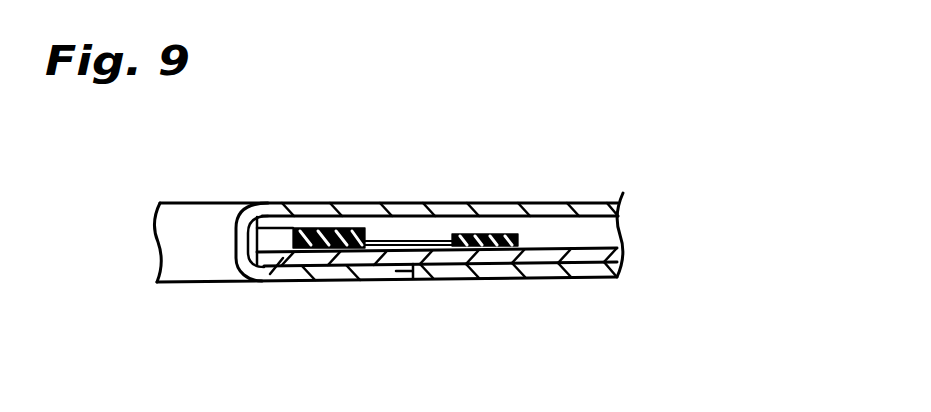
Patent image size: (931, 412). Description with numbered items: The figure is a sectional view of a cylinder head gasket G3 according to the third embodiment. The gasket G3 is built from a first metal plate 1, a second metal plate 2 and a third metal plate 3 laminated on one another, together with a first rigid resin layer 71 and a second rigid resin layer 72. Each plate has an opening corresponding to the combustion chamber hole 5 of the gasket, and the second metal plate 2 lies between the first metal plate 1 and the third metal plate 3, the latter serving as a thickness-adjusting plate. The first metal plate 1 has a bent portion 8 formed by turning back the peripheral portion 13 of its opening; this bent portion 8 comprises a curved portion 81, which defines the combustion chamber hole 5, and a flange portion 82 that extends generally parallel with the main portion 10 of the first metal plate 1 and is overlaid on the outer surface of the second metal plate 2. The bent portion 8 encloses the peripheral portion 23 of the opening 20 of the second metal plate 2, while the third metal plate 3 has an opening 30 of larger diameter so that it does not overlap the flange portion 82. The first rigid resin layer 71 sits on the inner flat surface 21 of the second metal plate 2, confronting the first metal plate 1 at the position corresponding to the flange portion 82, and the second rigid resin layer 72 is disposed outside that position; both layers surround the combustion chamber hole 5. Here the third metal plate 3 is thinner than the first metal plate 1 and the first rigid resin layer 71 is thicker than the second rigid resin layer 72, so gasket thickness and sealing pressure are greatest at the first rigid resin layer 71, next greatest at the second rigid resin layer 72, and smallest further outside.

The first metal plate 1 is at (586, 209).
The second metal plate 2 is at (618, 252).
The third metal plate 3 is at (553, 278).
The combustion chamber hole 5 is at (208, 212).
The bent portion 8 is at (302, 291).
The peripheral portion 13 is at (439, 279).
The main portion 10 is at (452, 206).
The opening 20 is at (265, 258).
The inner flat surface 21 is at (404, 241).
The peripheral portion 23 is at (320, 252).
The opening 30 is at (413, 278).
The first rigid resin layer 71 is at (323, 228).
The second rigid resin layer 72 is at (494, 234).
The curved portion 81 is at (243, 241).
The flange portion 82 is at (382, 278).
The cylinder head gasket G3 is at (627, 191).